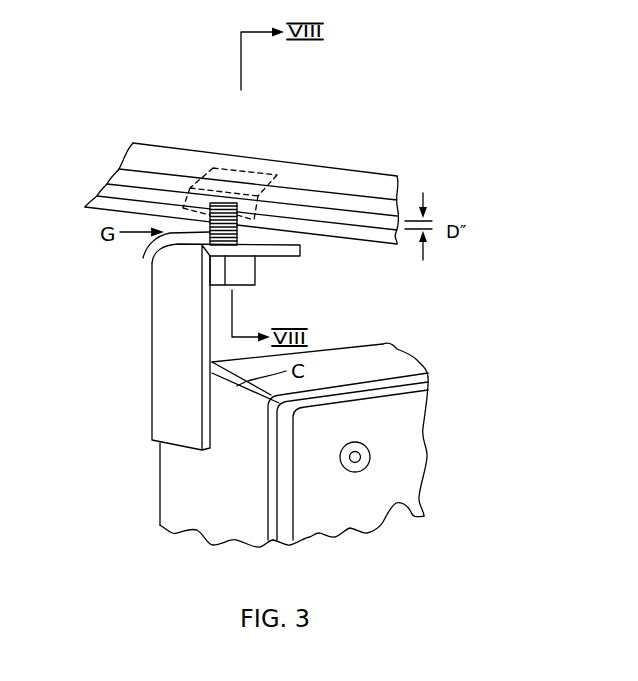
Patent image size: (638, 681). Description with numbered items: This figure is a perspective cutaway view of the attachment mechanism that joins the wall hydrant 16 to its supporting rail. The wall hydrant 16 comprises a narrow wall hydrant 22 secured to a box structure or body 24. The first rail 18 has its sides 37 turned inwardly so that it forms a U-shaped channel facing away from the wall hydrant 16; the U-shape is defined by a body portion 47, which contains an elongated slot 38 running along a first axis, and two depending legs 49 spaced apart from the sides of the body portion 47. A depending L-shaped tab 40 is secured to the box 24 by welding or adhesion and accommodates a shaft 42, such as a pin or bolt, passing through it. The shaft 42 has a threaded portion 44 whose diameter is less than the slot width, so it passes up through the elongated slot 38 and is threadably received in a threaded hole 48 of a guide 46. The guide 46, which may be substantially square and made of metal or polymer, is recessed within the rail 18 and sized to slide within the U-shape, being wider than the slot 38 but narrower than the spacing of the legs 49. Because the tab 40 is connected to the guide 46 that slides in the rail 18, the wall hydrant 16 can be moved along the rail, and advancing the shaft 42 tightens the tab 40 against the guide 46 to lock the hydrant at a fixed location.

The wall hydrant 16 is at (465, 374).
The first rail 18 is at (316, 175).
The narrow wall hydrant 22 is at (402, 463).
The box structure or body 24 is at (183, 489).
The sides 37 is at (392, 208).
The elongated slot 38 is at (378, 242).
The tab 40 is at (150, 325).
The shaft 42 is at (241, 276).
The threaded portion 44 is at (158, 247).
The guide 46 is at (273, 195).
The body portion 47 is at (397, 199).
The threaded hole 48 is at (279, 163).
The depending legs 49 is at (350, 181).